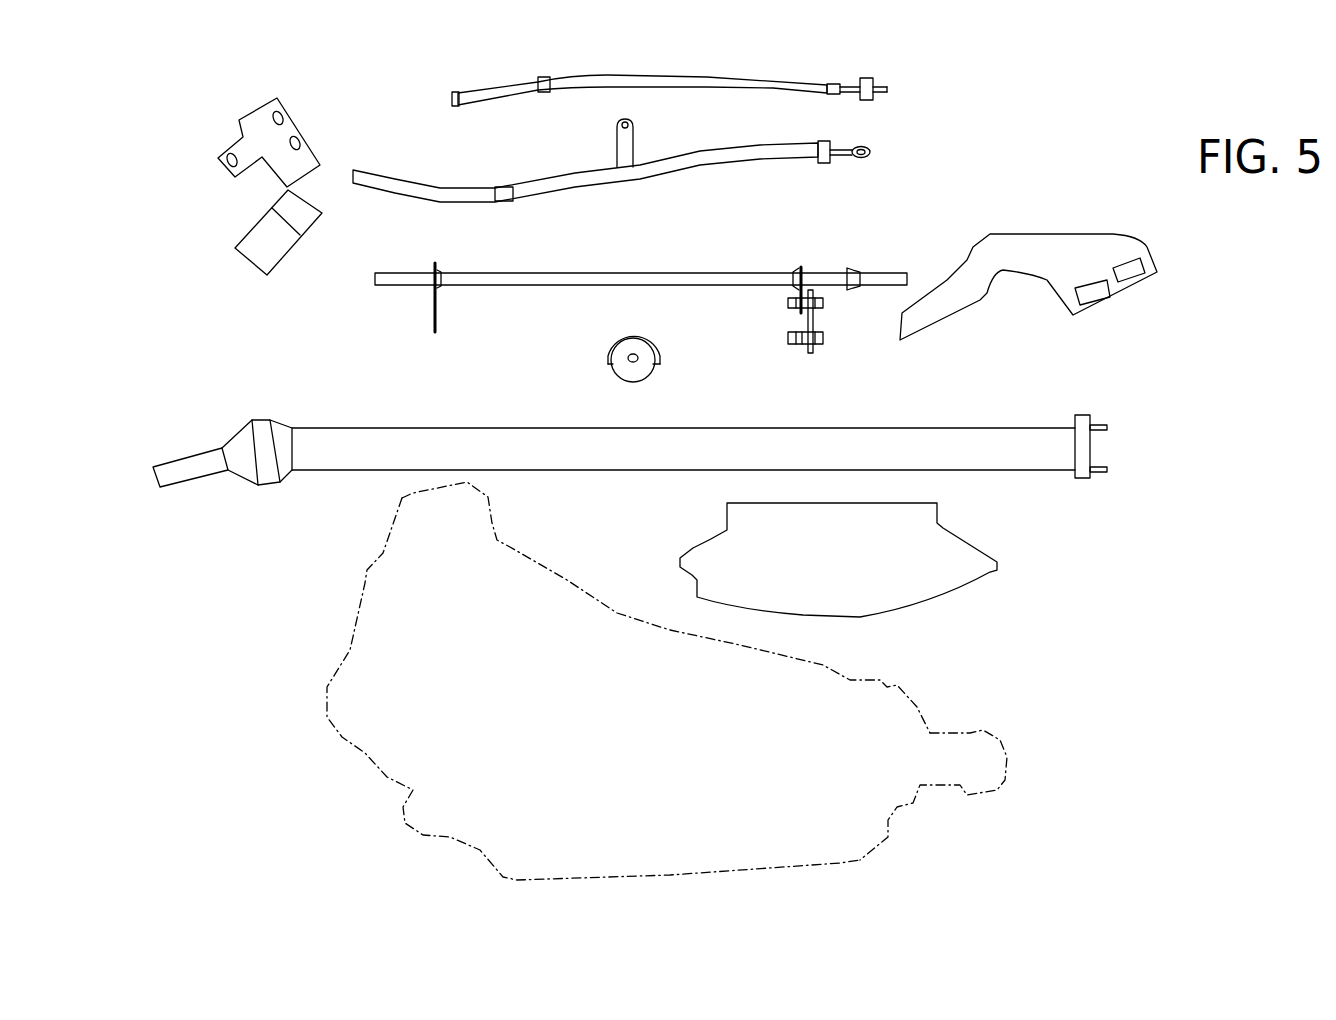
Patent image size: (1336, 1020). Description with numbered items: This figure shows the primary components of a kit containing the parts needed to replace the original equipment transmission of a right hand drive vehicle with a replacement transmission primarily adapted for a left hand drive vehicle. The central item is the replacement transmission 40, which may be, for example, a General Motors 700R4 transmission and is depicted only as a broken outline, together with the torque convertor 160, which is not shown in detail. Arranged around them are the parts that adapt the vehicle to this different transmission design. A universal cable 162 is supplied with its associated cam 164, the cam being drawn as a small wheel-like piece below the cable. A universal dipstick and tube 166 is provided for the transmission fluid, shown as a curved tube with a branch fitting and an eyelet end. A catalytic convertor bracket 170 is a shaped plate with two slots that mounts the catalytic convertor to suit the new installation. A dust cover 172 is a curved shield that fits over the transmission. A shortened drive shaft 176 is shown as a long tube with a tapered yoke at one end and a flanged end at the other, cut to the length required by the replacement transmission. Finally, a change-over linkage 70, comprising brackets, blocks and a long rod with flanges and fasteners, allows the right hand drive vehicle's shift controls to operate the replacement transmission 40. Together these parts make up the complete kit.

The universal cable 162 is at (755, 80).
The universal dipstick and tube 166 is at (672, 170).
The change-over linkage 70 is at (399, 302).
The cam 164 is at (655, 365).
The catalytic convertor bracket 170 is at (1060, 237).
The drive shaft 176 is at (943, 428).
The dust cover 172 is at (928, 606).
The torque convertor 160 is at (638, 686).
The replacement transmission 40 is at (889, 838).